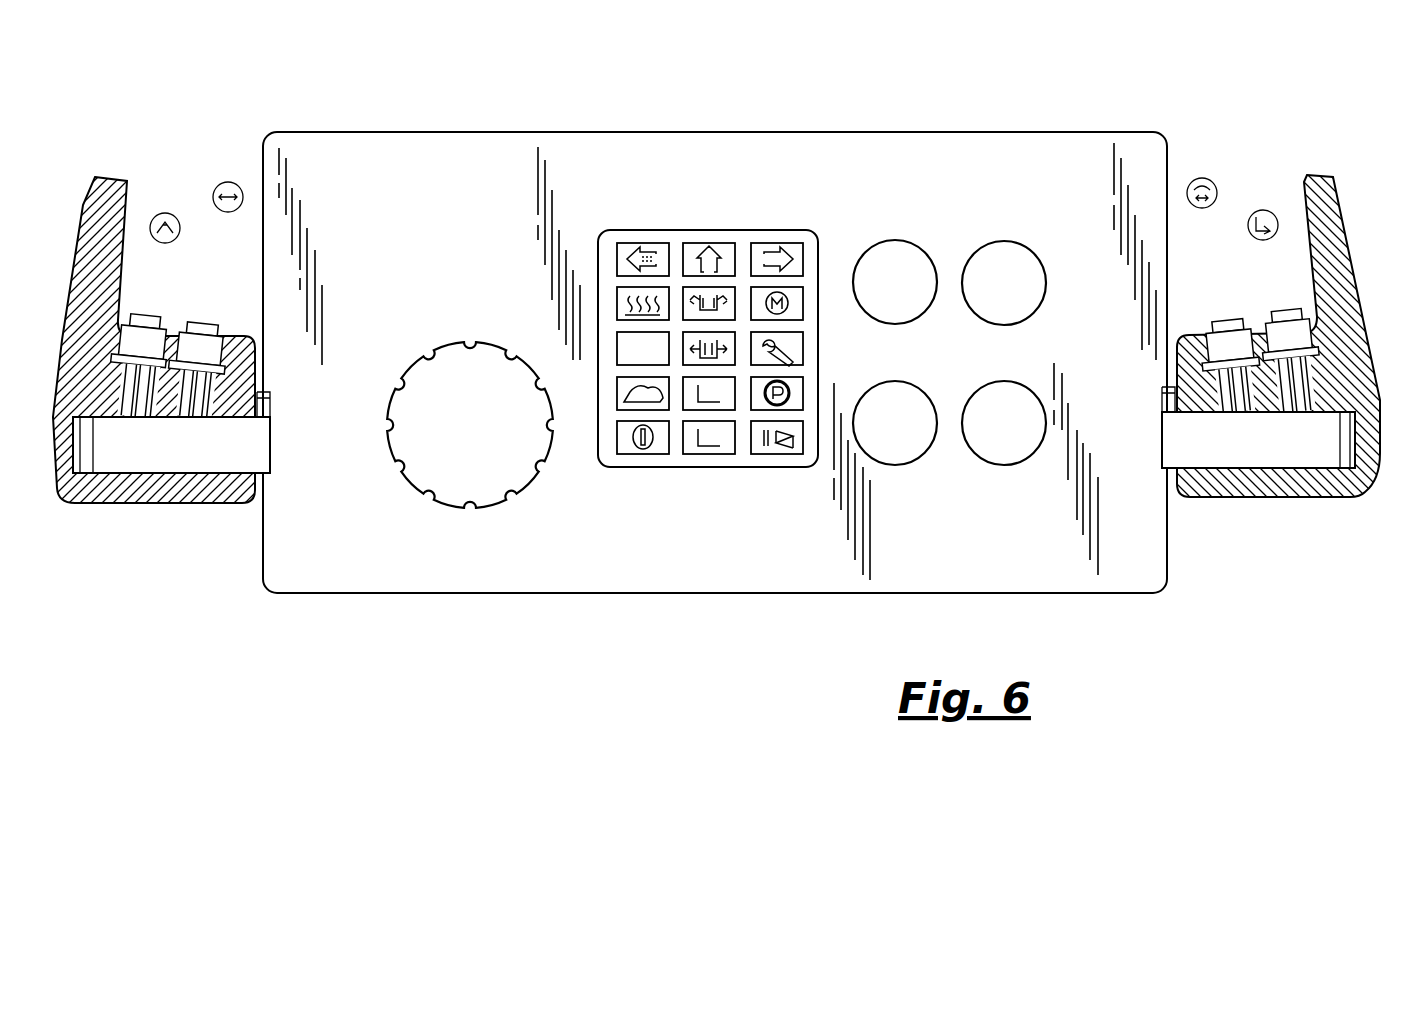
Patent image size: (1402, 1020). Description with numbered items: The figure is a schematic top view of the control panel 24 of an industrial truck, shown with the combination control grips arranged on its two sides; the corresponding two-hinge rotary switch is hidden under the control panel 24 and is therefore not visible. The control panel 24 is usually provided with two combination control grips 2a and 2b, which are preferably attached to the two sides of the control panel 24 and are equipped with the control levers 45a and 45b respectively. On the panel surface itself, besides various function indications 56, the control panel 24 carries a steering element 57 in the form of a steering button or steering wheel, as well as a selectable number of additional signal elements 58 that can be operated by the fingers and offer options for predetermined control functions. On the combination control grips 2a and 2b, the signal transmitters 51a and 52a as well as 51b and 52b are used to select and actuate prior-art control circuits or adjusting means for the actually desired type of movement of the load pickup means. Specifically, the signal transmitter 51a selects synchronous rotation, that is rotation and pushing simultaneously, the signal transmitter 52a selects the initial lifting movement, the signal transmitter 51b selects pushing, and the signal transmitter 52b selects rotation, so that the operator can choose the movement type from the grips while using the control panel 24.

The control panel 24 is at (960, 170).
The function indications 56 is at (677, 237).
The steering element 57 is at (471, 375).
The signal elements 58 is at (900, 272).
The control lever 45a is at (1345, 490).
The control lever 45b is at (93, 485).
The combination control grip 2a is at (1245, 470).
The combination control grip 2b is at (183, 460).
The signal transmitter 51a is at (1228, 320).
The signal transmitter 51b is at (197, 323).
The signal transmitter 52a is at (1285, 310).
The signal transmitter 52b is at (140, 317).